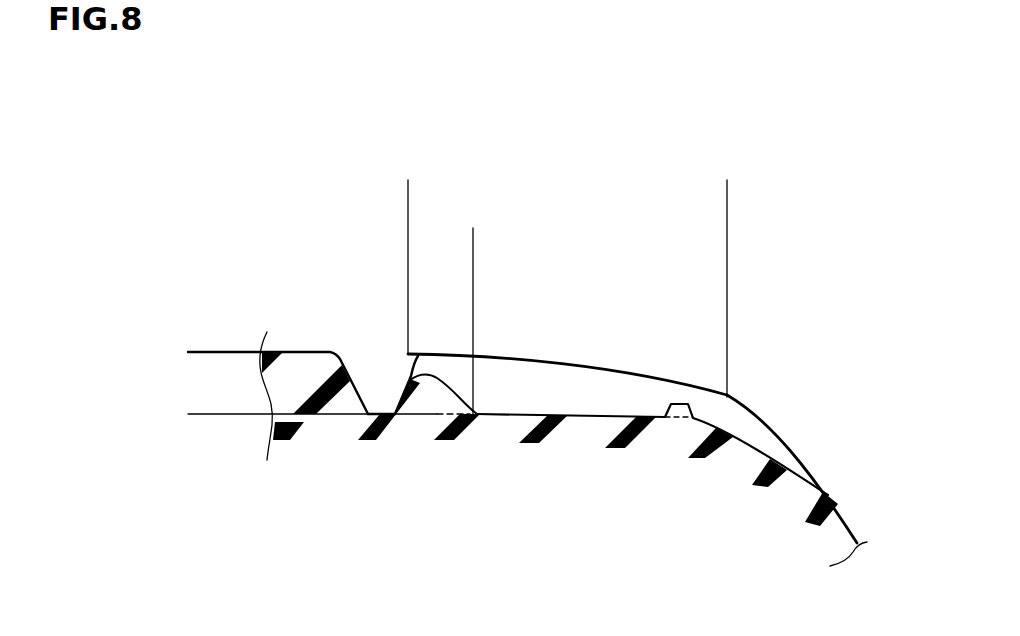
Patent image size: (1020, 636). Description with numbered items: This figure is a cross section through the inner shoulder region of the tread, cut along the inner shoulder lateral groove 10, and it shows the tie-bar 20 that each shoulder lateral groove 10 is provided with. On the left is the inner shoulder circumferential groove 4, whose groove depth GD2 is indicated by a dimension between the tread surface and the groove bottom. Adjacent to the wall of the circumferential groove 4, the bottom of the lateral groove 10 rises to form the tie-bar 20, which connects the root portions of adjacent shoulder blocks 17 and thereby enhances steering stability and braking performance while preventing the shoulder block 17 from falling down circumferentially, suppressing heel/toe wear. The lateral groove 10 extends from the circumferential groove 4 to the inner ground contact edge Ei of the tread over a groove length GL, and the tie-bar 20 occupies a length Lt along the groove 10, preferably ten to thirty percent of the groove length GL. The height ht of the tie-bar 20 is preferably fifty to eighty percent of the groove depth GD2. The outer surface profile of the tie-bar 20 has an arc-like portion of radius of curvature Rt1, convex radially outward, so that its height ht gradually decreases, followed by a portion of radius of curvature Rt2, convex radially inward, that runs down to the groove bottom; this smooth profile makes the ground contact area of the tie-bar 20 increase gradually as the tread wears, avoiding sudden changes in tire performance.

The shoulder circumferential groove 4 is at (365, 348).
The tie-bar 20 is at (423, 370).
The shoulder lateral groove 10 is at (550, 362).
The shoulder block 17 is at (623, 372).
The inner ground contact edge Ei is at (730, 395).
The groove length GL is at (727, 184).
The length of tie-bar Lt is at (473, 237).
The groove depth GD2 is at (194, 352).
The height of tie-bar ht is at (382, 335).
The radius of curvature Rt1 is at (440, 386).
The radius of curvature Rt2 is at (497, 376).